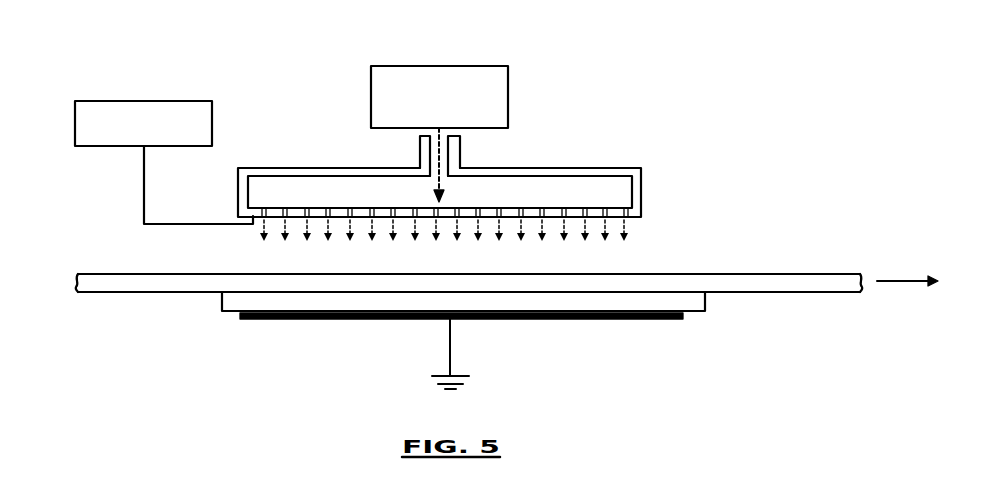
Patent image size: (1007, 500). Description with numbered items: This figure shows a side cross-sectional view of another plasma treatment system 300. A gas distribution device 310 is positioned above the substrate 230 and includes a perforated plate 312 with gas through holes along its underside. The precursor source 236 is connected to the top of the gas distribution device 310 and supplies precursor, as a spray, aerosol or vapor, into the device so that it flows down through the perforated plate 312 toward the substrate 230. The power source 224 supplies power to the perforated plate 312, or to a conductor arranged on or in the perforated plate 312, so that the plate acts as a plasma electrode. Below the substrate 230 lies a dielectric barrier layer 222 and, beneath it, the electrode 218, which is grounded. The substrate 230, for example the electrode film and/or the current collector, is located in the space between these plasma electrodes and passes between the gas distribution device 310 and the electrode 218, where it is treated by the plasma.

The plasma treatment system 300 is at (277, 40).
The power source 224 is at (178, 101).
The precursor source 236 is at (488, 66).
The gas distribution device 310 is at (641, 187).
The perforated plate 312 is at (630, 217).
The substrate 230 is at (775, 274).
The dielectric barrier layer 222 is at (693, 312).
The electrode 218 is at (502, 319).